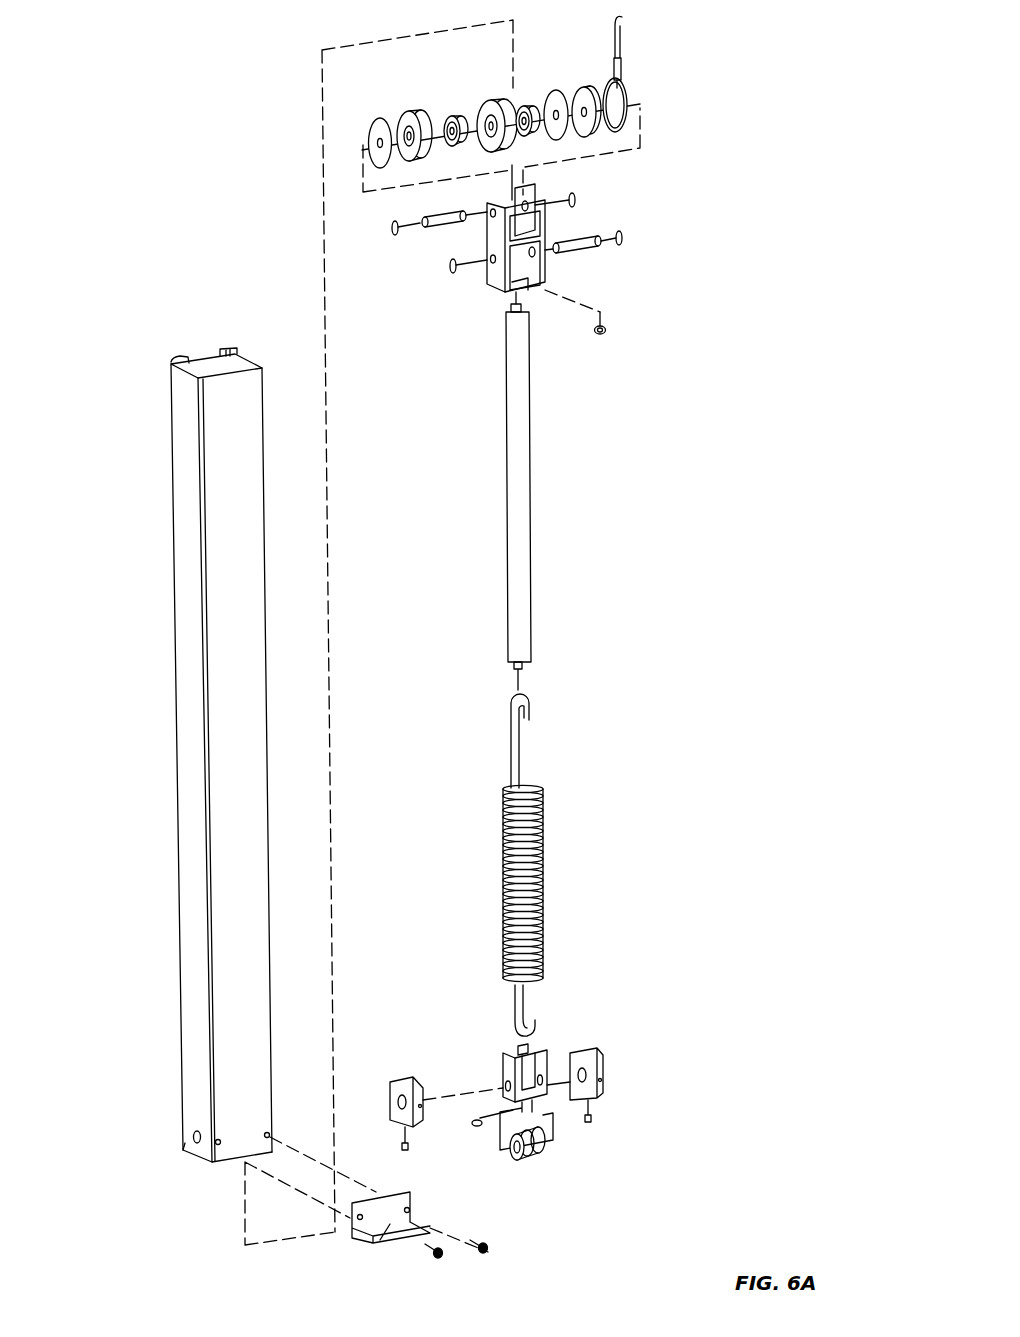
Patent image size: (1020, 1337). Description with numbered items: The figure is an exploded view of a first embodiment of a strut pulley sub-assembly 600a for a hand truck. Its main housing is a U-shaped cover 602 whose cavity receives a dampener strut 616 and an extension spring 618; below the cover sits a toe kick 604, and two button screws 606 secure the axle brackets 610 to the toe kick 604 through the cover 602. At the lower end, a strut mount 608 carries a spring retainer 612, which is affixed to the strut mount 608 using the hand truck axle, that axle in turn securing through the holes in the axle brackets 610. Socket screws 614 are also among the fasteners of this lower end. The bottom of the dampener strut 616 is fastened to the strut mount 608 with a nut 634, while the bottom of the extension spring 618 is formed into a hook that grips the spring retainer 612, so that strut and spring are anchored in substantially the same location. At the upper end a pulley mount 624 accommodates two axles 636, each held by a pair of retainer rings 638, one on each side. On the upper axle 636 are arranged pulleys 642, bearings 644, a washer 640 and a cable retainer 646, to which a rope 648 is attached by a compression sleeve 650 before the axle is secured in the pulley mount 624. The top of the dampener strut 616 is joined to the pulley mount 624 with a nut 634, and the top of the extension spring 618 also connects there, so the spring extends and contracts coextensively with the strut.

The strut pulley sub-assembly 600a is at (138, 118).
The U-shaped cover 602 is at (171, 462).
The toe kick 604 is at (365, 1245).
The button screws 606 is at (494, 1251).
The strut mount 608 is at (549, 1050).
The axle brackets 610 is at (608, 1074).
The spring retainer 612 is at (546, 1160).
The socket screws 614 is at (596, 1126).
The dampener strut 616 is at (534, 599).
The extension spring 618 is at (548, 862).
The pulley mount 624 is at (550, 268).
The nut 634 is at (610, 336).
The axle 636 is at (595, 250).
The retainer rings 638 is at (626, 238).
The washer 640 is at (377, 117).
The pulleys 642 is at (412, 108).
The bearings 644 is at (461, 110).
The cable retainer 646 is at (581, 84).
The rope 648 is at (631, 93).
The compression sleeve 650 is at (627, 56).